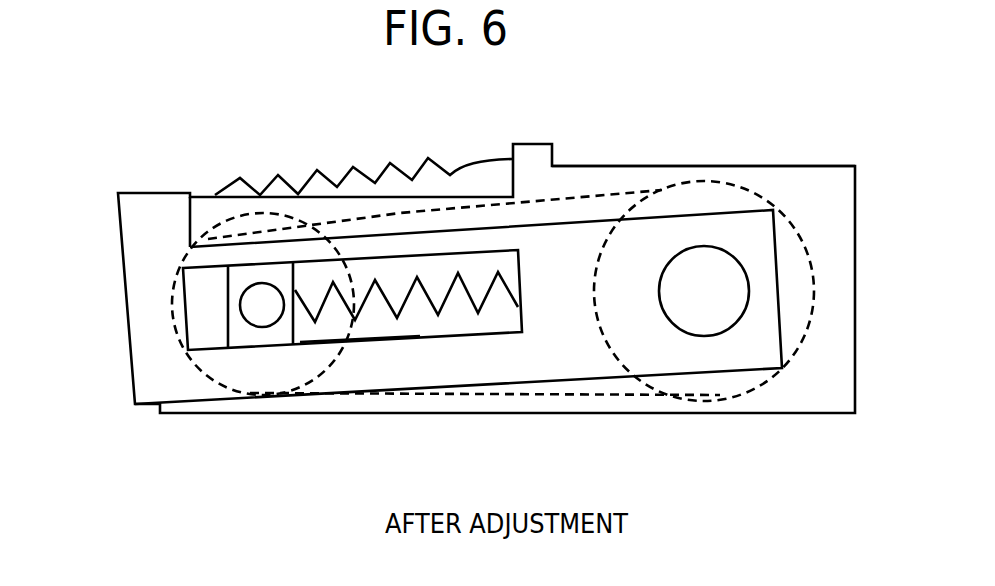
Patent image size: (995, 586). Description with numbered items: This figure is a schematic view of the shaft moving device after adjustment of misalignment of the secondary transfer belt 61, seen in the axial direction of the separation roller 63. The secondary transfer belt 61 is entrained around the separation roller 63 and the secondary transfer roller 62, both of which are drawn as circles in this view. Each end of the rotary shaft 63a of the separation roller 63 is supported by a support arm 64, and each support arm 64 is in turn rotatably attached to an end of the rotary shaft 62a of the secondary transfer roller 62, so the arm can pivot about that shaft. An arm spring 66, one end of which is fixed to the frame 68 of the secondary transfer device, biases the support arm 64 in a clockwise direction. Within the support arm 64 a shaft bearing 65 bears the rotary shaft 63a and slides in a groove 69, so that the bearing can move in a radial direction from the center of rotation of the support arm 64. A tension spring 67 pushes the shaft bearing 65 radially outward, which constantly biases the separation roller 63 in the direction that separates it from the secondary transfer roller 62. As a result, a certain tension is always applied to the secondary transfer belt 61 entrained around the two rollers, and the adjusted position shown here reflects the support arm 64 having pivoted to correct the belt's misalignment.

The secondary transfer belt 61 is at (588, 196).
The secondary transfer roller 62 is at (603, 340).
The rotary shaft of the secondary transfer roller 62a is at (723, 333).
The separation roller 63 is at (333, 353).
The rotary shaft of the separation roller 63a is at (262, 308).
The support arm 64 is at (118, 210).
The shaft bearing 65 is at (184, 287).
The arm spring 66 is at (308, 178).
The tension spring 67 is at (448, 305).
The frame 68 is at (785, 166).
The groove 69 is at (387, 340).